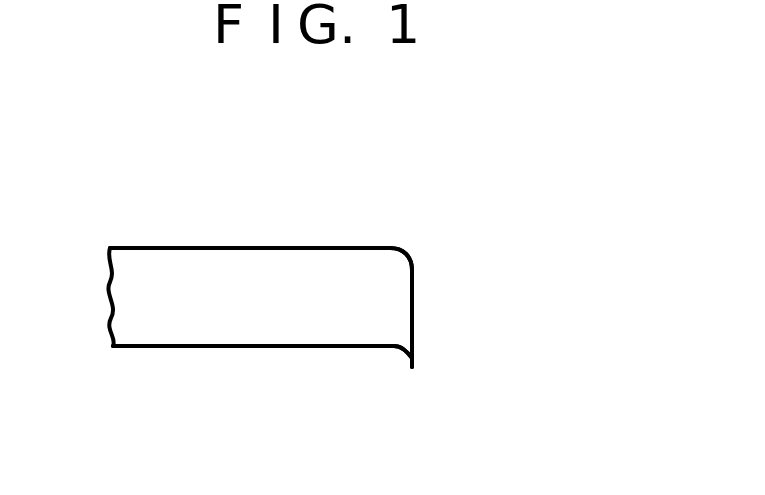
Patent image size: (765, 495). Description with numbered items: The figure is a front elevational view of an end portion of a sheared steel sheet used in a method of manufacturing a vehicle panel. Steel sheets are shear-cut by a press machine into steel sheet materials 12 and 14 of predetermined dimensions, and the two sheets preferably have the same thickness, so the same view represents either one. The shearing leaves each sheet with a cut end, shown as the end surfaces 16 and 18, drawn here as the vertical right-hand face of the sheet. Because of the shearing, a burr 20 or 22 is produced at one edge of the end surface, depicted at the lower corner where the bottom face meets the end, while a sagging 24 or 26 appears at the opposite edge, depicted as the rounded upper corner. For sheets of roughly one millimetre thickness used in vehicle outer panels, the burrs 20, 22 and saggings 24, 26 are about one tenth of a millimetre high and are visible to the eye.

The steel sheet material 12 is at (260, 280).
The steel sheet material 14 is at (178, 257).
The end surface 16 is at (497, 300).
The end surface 18 is at (413, 310).
The burr 20 is at (510, 365).
The burr 22 is at (412, 350).
The sagging 24 is at (490, 217).
The sagging 26 is at (416, 255).